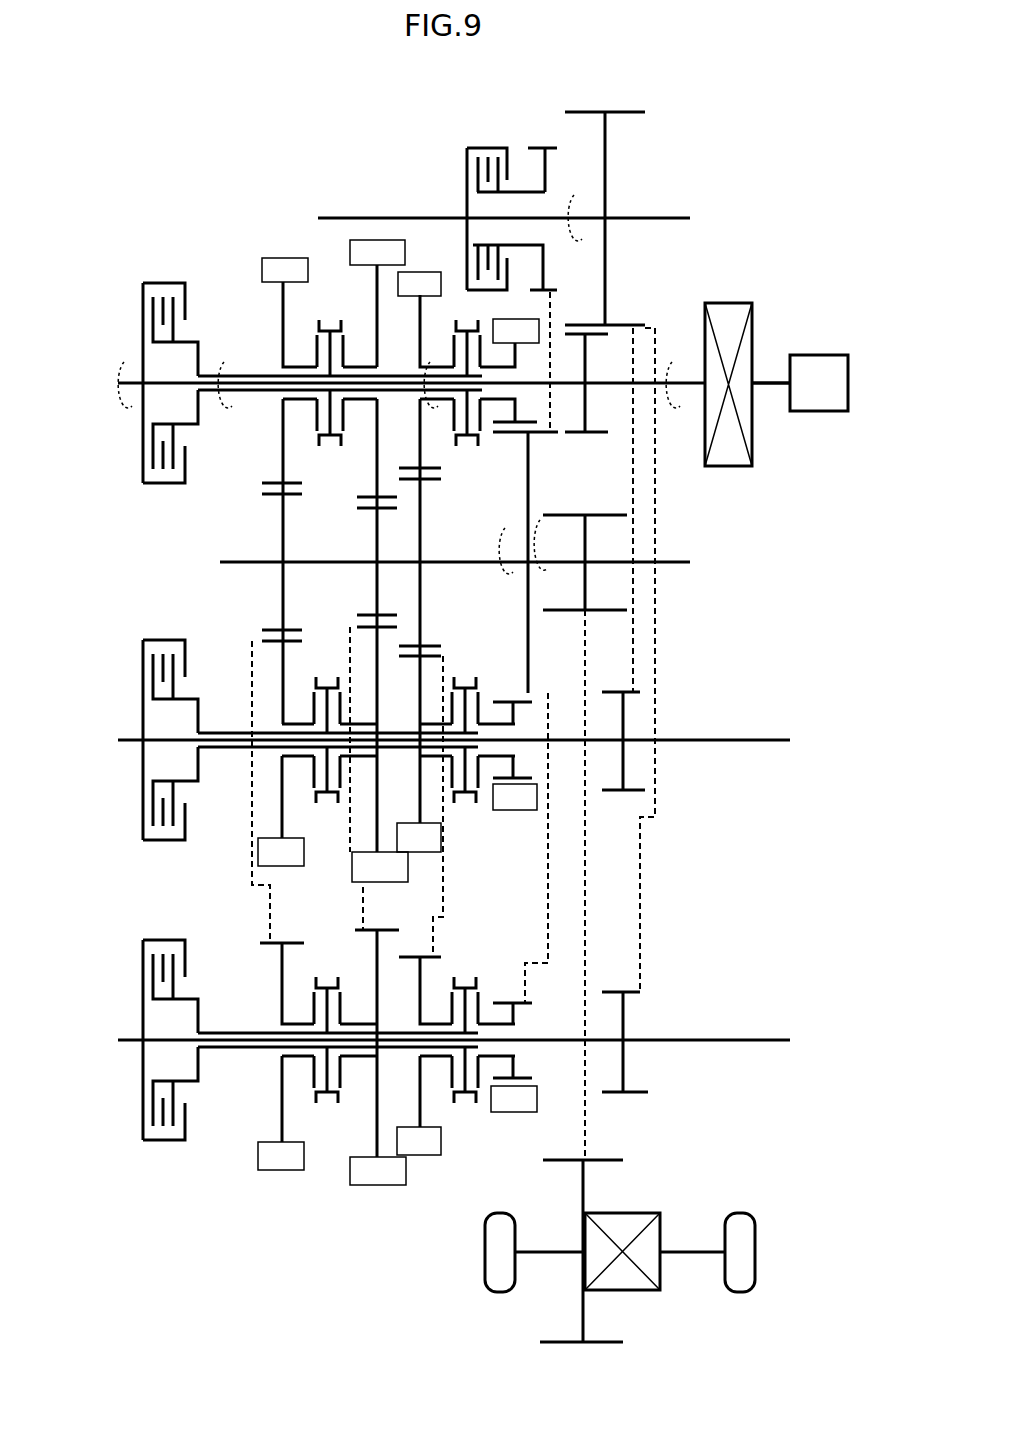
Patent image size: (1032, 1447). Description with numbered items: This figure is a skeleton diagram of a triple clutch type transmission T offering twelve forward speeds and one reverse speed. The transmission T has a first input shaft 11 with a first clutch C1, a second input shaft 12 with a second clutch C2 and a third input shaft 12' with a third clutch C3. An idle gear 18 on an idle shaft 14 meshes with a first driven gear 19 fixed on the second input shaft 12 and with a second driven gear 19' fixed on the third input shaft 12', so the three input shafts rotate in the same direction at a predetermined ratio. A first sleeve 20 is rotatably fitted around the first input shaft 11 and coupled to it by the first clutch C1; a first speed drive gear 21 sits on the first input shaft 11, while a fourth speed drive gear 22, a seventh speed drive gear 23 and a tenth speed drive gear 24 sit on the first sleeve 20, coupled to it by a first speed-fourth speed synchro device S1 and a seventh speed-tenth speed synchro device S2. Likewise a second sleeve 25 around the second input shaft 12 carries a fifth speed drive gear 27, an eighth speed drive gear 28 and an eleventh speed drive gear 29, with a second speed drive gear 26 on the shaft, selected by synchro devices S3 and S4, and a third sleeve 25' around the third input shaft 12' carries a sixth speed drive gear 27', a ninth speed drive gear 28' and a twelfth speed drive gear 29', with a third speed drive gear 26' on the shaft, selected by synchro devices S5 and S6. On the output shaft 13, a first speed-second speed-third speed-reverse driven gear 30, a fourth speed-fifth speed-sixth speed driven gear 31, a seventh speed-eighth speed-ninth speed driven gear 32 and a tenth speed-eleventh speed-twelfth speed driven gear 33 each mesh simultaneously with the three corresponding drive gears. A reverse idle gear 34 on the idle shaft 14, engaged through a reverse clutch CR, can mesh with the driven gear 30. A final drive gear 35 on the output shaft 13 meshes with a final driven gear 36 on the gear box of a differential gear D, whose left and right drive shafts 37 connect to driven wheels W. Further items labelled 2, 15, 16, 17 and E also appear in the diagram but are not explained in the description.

The first-speed drive gear 2 is at (497, 322).
The first input shaft 11 is at (668, 378).
The second input shaft 12 is at (454, 716).
The third input shaft 12' is at (454, 1018).
The output shaft 13 is at (690, 561).
The idle shaft 14 is at (655, 218).
The crankshaft 15 is at (762, 382).
The motor generator 16 is at (722, 304).
The idle drive gear 17 is at (590, 434).
The idle gear 18 is at (640, 110).
The first driven gear 19 is at (648, 559).
The second driven gear 19' is at (651, 710).
The first sleeve 20 is at (262, 376).
The first speed drive gear 21 is at (497, 338).
The fourth speed drive gear 22 is at (428, 293).
The seventh speed drive gear 23 is at (300, 284).
The tenth speed drive gear 24 is at (392, 264).
The second sleeve 25 is at (336, 702).
The third sleeve 25' is at (338, 1004).
The second speed drive gear 26 is at (529, 848).
The third speed drive gear 26' is at (532, 1063).
The fifth speed drive gear 27 is at (441, 806).
The sixth speed drive gear 27' is at (444, 1068).
The eighth speed drive gear 28 is at (260, 792).
The ninth speed drive gear 28' is at (259, 1071).
The eleventh speed drive gear 29 is at (354, 778).
The twelfth speed drive gear 29' is at (355, 1074).
The first speed-second speed-third speed-reverse driven gear 30 is at (535, 435).
The fourth speed-fifth speed-sixth speed driven gear 31 is at (438, 480).
The seventh speed-eighth speed-ninth speed driven gear 32 is at (300, 494).
The tenth speed-eleventh speed-twelfth speed driven gear 33 is at (385, 509).
The reverse idle gear 34 is at (544, 147).
The final drive gear 35 is at (595, 612).
The final driven gear 36 is at (612, 1160).
The drive shaft 37 is at (678, 1250).
The first clutch C1 is at (133, 297).
The second clutch C2 is at (133, 659).
The third clutch C3 is at (133, 959).
The reverse clutch CR is at (481, 141).
The first speed-fourth speed synchro device S1 is at (472, 463).
The seventh speed-tenth speed synchro device S2 is at (335, 463).
The second speed-fifth speed synchro device S3 is at (469, 658).
The eighth speed-eleventh speed synchro device S4 is at (331, 661).
The third speed-sixth speed synchro device S5 is at (469, 966).
The ninth speed-twelfth speed synchro device S6 is at (331, 966).
The transmission T is at (289, 207).
The engine E is at (819, 383).
The differential gear D is at (632, 1222).
The driven wheels W is at (755, 1248).